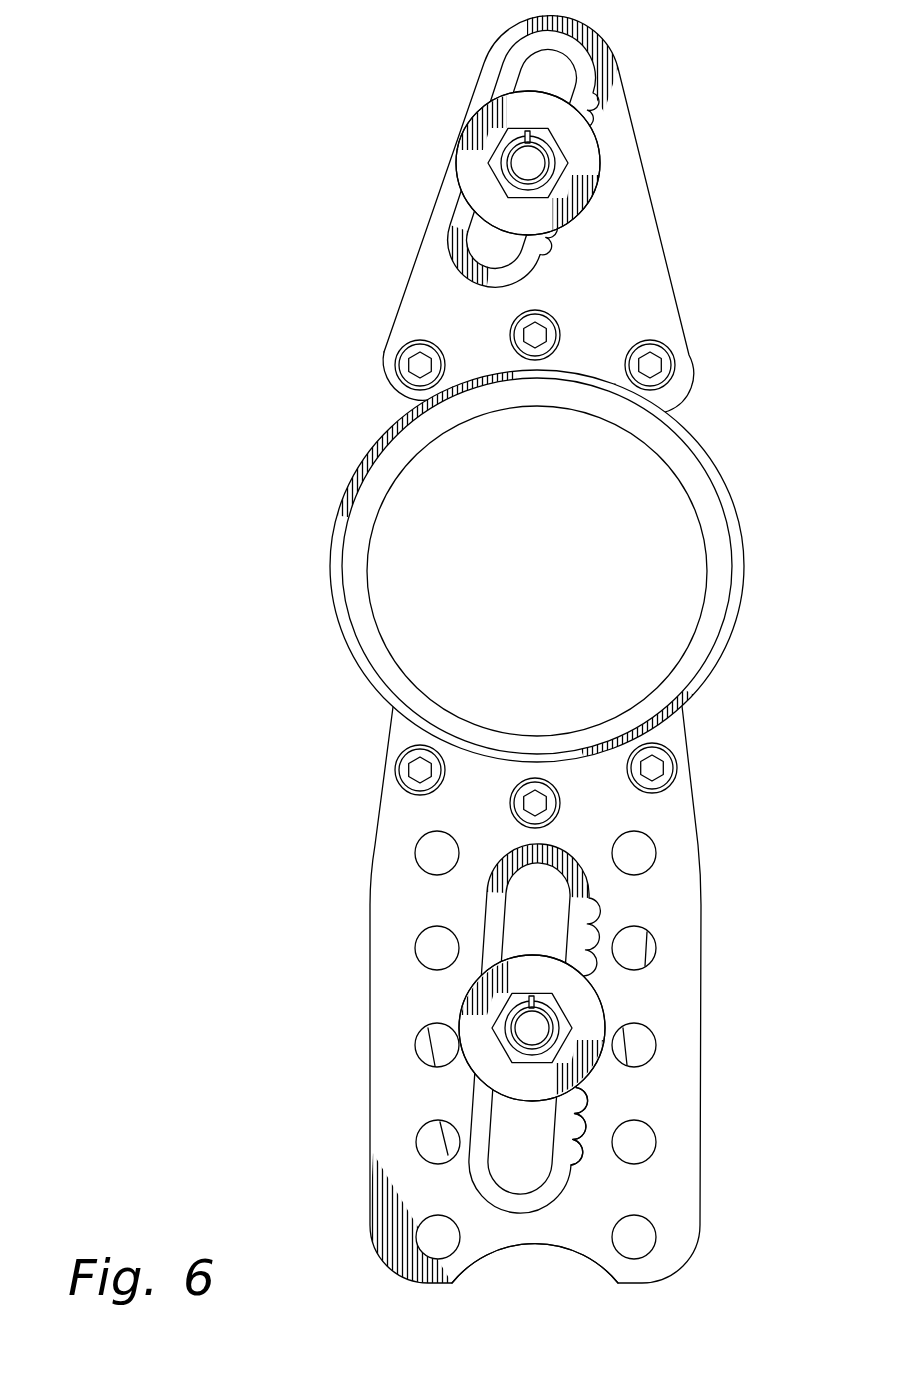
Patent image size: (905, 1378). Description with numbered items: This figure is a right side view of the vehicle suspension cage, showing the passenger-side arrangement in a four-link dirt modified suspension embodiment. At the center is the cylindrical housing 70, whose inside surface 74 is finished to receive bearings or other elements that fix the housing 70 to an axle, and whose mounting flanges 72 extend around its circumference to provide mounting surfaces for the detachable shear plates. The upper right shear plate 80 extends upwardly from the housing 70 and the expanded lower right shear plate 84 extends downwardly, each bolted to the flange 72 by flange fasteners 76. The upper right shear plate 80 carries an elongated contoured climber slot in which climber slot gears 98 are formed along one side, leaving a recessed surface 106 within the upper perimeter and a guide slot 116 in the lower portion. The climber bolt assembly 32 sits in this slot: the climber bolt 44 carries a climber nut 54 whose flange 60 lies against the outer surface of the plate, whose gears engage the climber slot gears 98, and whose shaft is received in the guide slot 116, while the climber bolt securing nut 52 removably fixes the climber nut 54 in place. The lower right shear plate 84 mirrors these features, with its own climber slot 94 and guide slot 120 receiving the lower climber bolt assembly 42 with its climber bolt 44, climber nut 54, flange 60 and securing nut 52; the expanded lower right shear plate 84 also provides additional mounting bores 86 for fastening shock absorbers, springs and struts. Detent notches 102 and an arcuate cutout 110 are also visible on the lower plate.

The climber bolt assembly 32 is at (616, 199).
The climber bolt assembly 42 is at (442, 1000).
The climber bolt 44 is at (533, 165).
The climber bolt securing nut 52 is at (548, 146).
The climber nut 54 is at (446, 181).
The climber nut flange 60 is at (467, 163).
The cylindrical housing 70 is at (346, 520).
The mounting flanges 72 is at (745, 555).
The inside surface 74 is at (528, 735).
The flange fasteners 76 is at (403, 338).
The upper right shear plate 80 is at (397, 280).
The lower right shear plate 84 is at (712, 1245).
The mounting bores 86 is at (641, 1142).
The climber slot 94 is at (498, 889).
The climber slot gears 98 is at (530, 262).
The detent notches 102 is at (567, 1120).
The recessed surface 106 is at (525, 53).
The arcuate cutout 110 is at (520, 1200).
The guide slot 116 is at (523, 72).
The guide slot 120 is at (473, 1142).